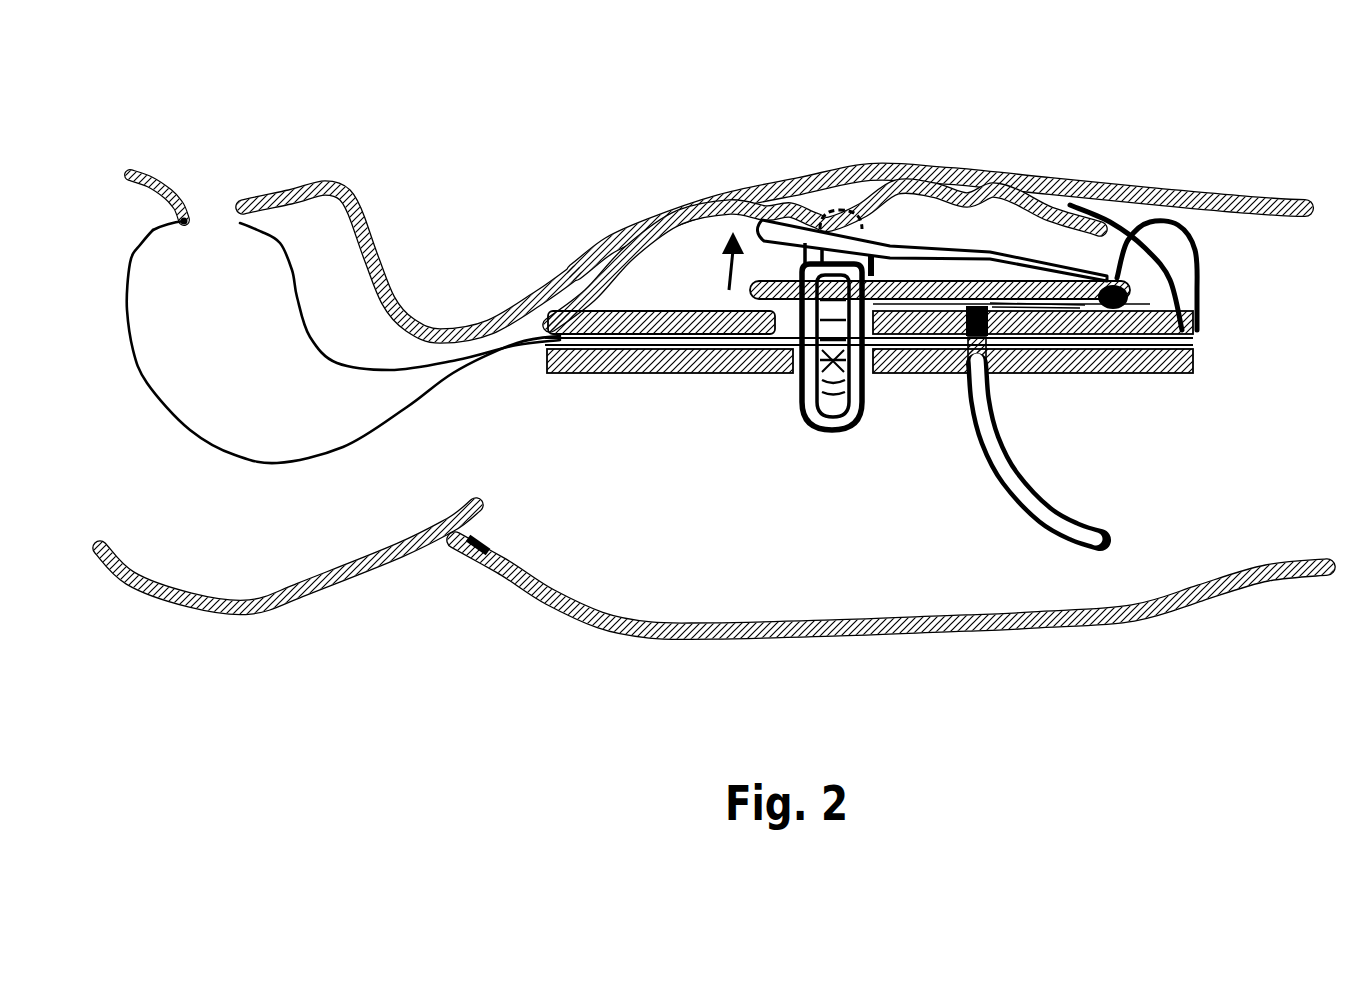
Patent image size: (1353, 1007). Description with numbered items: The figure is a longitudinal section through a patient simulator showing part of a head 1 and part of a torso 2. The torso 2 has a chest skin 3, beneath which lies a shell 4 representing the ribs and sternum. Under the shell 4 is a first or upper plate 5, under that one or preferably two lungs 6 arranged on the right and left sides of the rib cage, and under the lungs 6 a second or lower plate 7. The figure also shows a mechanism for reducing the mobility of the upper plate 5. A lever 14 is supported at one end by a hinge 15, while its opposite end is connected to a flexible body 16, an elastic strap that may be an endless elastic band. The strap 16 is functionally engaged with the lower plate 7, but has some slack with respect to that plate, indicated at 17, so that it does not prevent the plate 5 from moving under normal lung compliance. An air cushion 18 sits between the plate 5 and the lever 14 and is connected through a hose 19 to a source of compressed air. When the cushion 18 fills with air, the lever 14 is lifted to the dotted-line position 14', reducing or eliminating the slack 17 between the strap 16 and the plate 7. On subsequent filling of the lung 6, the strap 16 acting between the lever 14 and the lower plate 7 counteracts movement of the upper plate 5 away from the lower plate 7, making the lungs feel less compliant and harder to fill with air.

The head 1 is at (400, 207).
The torso 2 is at (1117, 103).
The chest skin 3 is at (800, 167).
The shell 4 is at (650, 202).
The first plate 5 is at (643, 307).
The lung 6 is at (587, 345).
The second plate 7 is at (667, 372).
The lever 14 is at (940, 193).
The lifted position of lever 14' is at (932, 174).
The hinge 15 is at (1150, 220).
The flexible body 16 is at (818, 430).
The slack 17 is at (830, 400).
The air cushion 18 is at (1000, 377).
The hose 19 is at (1008, 457).